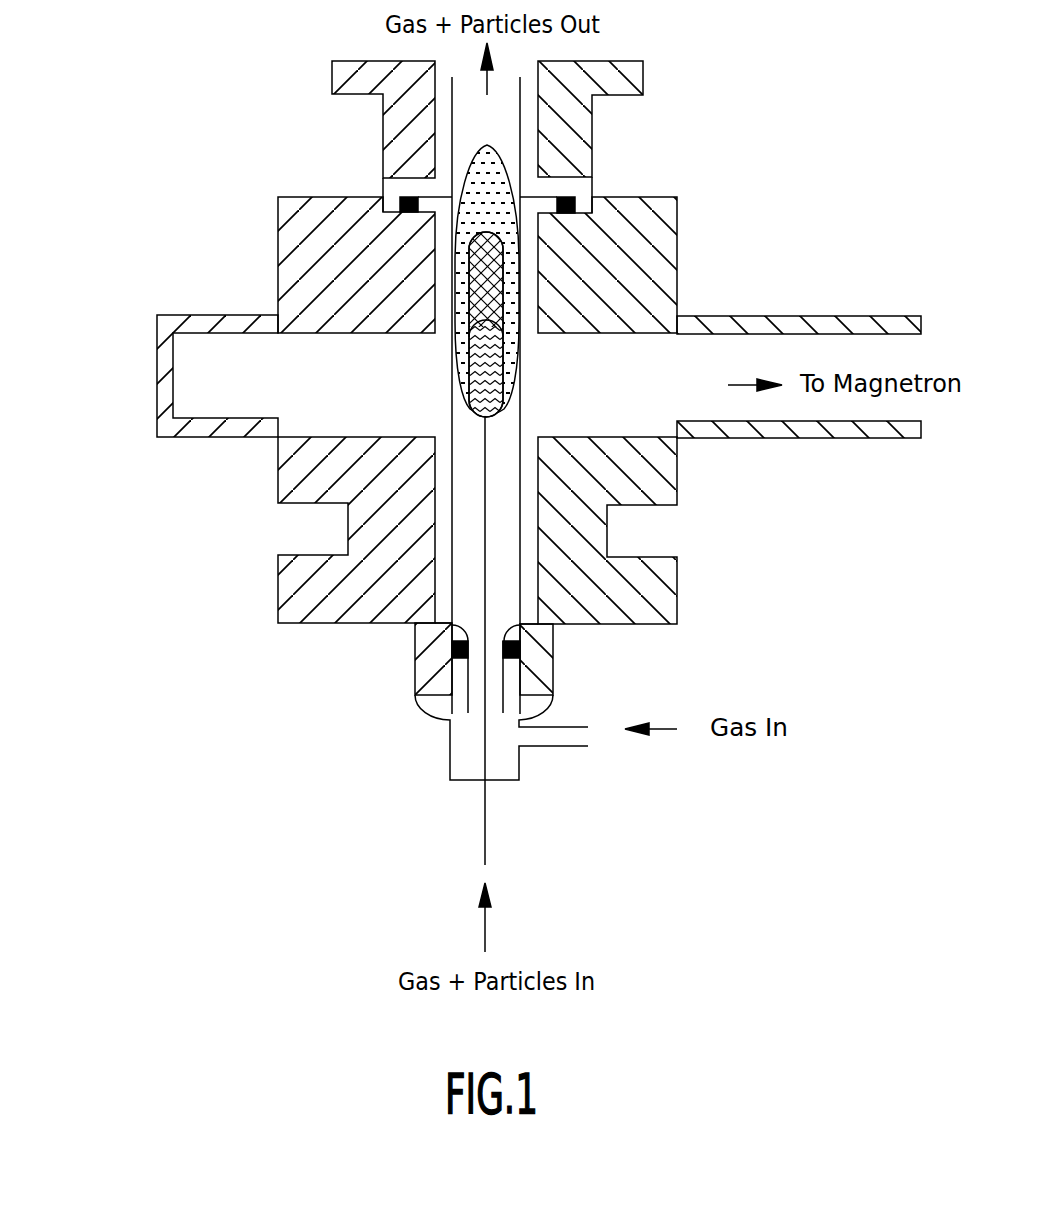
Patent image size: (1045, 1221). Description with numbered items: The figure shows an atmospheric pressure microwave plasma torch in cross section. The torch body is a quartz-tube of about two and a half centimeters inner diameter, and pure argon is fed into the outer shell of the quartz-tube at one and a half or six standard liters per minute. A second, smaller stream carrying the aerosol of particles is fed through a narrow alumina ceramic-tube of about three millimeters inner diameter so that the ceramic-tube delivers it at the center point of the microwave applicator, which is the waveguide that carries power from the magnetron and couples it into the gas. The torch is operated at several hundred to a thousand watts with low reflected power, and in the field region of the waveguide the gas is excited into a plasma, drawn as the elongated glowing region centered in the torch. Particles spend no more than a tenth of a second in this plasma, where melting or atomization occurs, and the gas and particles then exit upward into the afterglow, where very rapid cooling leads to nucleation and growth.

The element waveguide is at (764, 297).
The quartz tube quartz-tube is at (546, 462).
The ceramic tube ceramic-tube is at (460, 461).
The element plasma is at (535, 374).